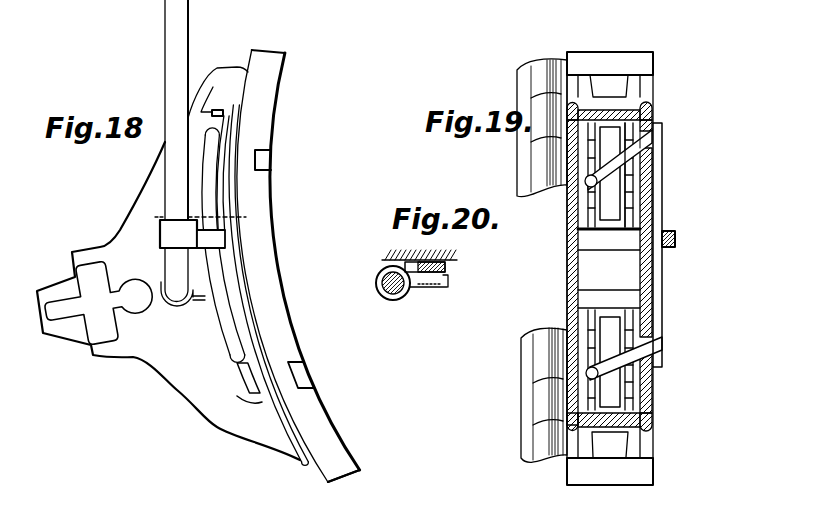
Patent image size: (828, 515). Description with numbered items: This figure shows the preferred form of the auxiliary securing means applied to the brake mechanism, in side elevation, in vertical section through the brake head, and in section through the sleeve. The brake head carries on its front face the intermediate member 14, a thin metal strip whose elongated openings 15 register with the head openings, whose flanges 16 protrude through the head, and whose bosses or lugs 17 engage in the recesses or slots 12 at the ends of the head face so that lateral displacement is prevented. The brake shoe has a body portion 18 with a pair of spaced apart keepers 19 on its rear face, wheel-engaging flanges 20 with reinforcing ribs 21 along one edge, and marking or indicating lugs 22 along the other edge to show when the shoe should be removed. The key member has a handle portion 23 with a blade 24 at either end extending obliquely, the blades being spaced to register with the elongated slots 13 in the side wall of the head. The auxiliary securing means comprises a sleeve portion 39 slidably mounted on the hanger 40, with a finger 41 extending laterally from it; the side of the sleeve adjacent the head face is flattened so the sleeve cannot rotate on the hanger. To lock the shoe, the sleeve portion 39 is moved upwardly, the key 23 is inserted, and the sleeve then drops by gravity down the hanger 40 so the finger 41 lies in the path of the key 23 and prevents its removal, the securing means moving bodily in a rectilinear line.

In FIG. 19, the recesses or slots 12 is at (637, 442).
In FIG. 18, the elongated slots 13 is at (220, 113).
In FIG. 19, the elongated slots 13 is at (645, 175).
In FIG. 18, the intermediate member 14 is at (296, 492).
In FIG. 19, the intermediate member 14 is at (633, 213).
In FIG. 19, the elongated openings 15 is at (622, 187).
In FIG. 19, the flanges 16 is at (628, 140).
In FIG. 19, the bosses or lugs 17 is at (622, 83).
In FIG. 18, the body portion 18 is at (279, 122).
In FIG. 19, the keepers 19 is at (650, 108).
In FIG. 18, the wheel-engaging flanges 20 is at (202, 215).
In FIG. 19, the wheel-engaging flanges 20 is at (523, 145).
In FIG. 19, the reinforcing ribs 21 is at (550, 103).
In FIG. 18, the marking or indicating lugs 22 is at (262, 160).
In FIG. 18, the handle portion of the key member 23 is at (220, 289).
In FIG. 20, the handle portion of the key member 23 is at (445, 267).
In FIG. 19, the handle portion of the key member 23 is at (663, 260).
In FIG. 19, the blade 24 is at (640, 153).
In FIG. 18, the sleeve portion 39 is at (162, 218).
In FIG. 20, the sleeve portion 39 is at (405, 293).
In FIG. 18, the hanger 40 is at (188, 22).
In FIG. 20, the hanger 40 is at (383, 278).
In FIG. 18, the finger 41 is at (226, 240).
In FIG. 20, the finger 41 is at (448, 287).
In FIG. 19, the finger 41 is at (675, 240).